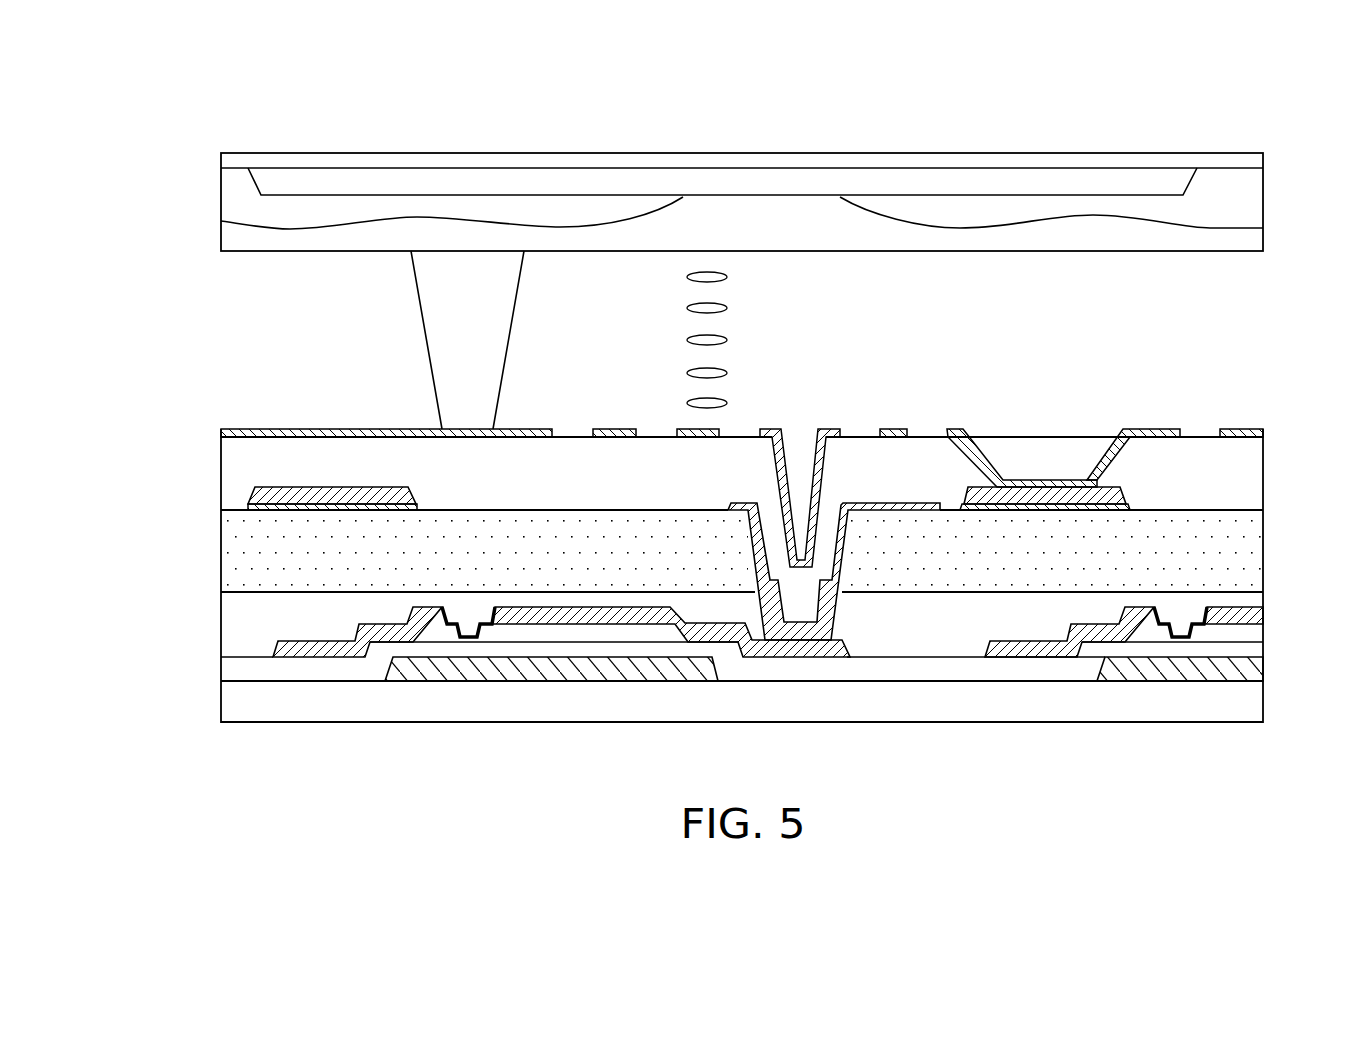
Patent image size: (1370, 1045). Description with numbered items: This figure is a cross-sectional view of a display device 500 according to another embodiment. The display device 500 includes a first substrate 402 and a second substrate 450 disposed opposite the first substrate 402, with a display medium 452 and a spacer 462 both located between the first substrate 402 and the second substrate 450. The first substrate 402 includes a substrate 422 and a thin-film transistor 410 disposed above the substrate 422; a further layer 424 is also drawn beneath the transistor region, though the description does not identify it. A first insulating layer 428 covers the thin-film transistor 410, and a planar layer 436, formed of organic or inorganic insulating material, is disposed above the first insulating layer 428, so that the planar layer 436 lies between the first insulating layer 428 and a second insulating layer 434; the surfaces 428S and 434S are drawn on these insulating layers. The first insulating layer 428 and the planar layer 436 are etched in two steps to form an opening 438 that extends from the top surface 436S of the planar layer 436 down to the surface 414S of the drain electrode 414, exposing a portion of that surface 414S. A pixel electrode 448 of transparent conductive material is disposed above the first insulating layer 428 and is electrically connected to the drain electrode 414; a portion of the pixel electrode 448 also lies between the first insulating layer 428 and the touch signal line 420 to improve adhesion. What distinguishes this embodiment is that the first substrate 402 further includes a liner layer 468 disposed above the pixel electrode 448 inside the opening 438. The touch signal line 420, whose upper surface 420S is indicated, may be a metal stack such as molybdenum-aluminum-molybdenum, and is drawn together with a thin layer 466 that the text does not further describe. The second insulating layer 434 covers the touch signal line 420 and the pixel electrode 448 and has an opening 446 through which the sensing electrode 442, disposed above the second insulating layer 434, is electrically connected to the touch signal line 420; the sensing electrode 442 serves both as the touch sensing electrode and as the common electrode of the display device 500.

The display device 500 is at (180, 66).
The second substrate 450 is at (195, 148).
The spacer 462 is at (467, 277).
The display medium 452 is at (715, 307).
The first substrate 402 is at (195, 407).
The substrate 422 is at (1243, 702).
The light shielding layer 424 is at (1082, 667).
The first insulating layer 428 is at (1243, 600).
The surface of insulating layer 428S is at (1215, 592).
The drain electrode 414 is at (671, 617).
The surface of the drain electrode 414S is at (797, 637).
The thin-film transistor 410 is at (455, 607).
The planar layer 436 is at (1243, 575).
The top surface of the planar layer 436S is at (1217, 510).
The opening 438 is at (847, 553).
The pixel electrode 448 is at (880, 505).
The second insulating layer 434 is at (1243, 493).
The surface of passivation layer 434S is at (1229, 431).
The liner layer 468 is at (808, 622).
The sensing electrode 442 is at (1256, 429).
The touch signal line 420 is at (268, 495).
The surface of conductive pattern 420S is at (1045, 487).
The conductive layer 466 is at (299, 505).
The opening 446 is at (1112, 463).